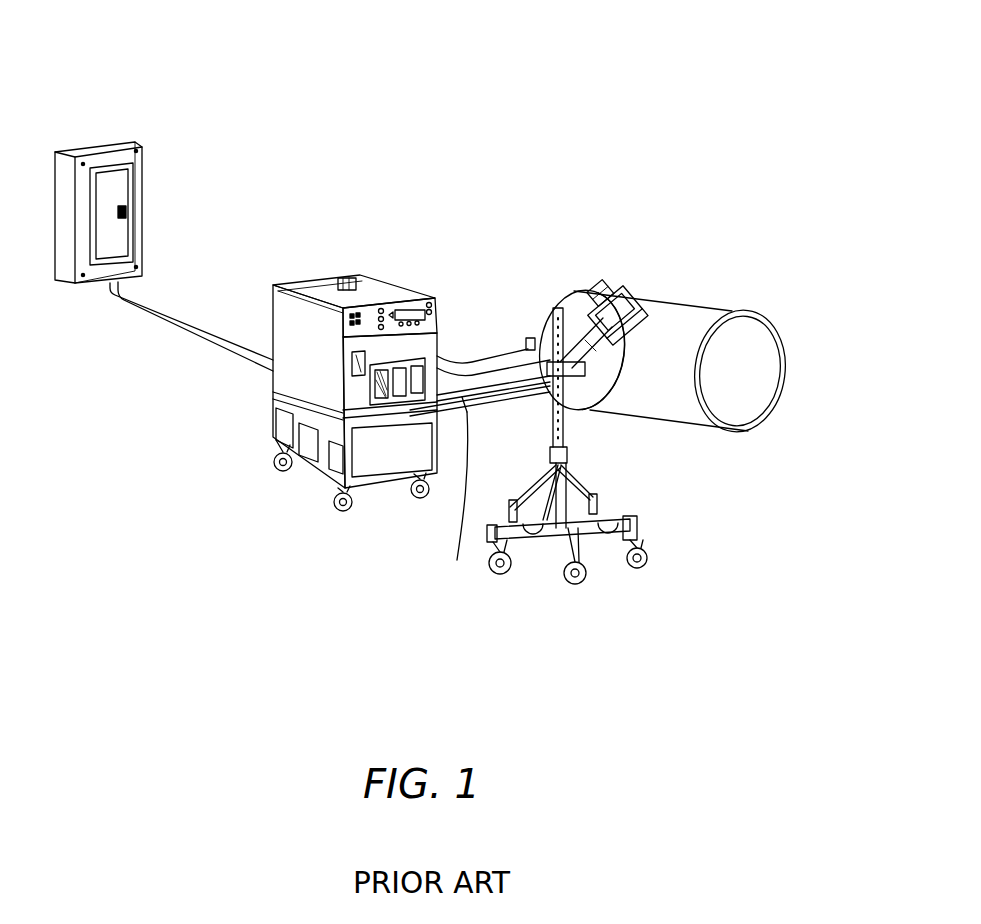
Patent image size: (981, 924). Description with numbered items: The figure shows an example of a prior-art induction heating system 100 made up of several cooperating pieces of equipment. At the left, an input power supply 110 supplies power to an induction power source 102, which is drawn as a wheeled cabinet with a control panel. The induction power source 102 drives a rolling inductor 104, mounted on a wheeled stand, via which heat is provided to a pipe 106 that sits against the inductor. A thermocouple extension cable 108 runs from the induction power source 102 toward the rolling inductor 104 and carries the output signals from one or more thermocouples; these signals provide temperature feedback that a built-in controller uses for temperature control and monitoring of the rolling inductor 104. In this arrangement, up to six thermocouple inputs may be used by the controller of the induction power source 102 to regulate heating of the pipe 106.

The induction heating system 100 is at (571, 74).
The induction power source 102 is at (387, 287).
The rolling inductor 104 is at (650, 300).
The pipe 106 is at (720, 307).
The thermocouple extension cable 108 is at (457, 560).
The input power supply 110 is at (141, 142).